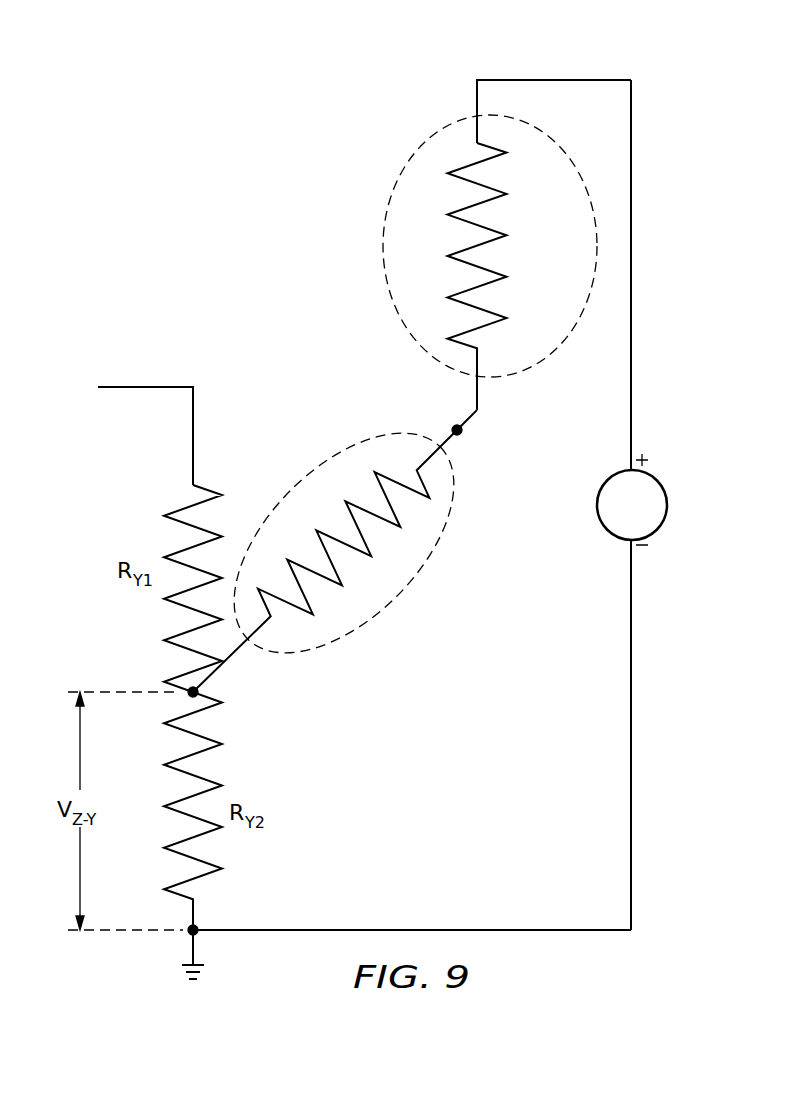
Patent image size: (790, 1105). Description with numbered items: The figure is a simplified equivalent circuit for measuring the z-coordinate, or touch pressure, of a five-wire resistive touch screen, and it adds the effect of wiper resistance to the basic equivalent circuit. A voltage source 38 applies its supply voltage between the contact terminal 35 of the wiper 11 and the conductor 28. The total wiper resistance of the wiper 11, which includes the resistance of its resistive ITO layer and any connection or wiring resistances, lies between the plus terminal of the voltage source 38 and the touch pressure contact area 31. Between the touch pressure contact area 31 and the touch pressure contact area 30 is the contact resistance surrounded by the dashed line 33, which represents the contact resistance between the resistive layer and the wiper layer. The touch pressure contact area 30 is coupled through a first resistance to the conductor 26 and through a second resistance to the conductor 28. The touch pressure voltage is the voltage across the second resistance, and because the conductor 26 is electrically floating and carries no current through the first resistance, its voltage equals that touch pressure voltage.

The contact terminal 35 is at (477, 76).
The wiper 11 is at (383, 228).
The touch pressure contact area 31 is at (464, 433).
The dashed line 33 is at (356, 437).
The conductor 26 is at (146, 387).
The touch pressure contact area 30 is at (200, 692).
The conductor 28 is at (523, 930).
The voltage source 38 is at (667, 507).